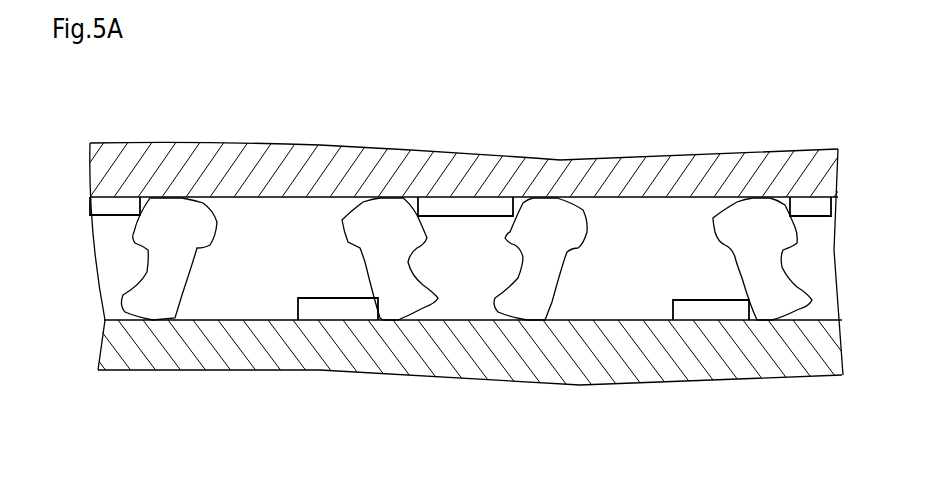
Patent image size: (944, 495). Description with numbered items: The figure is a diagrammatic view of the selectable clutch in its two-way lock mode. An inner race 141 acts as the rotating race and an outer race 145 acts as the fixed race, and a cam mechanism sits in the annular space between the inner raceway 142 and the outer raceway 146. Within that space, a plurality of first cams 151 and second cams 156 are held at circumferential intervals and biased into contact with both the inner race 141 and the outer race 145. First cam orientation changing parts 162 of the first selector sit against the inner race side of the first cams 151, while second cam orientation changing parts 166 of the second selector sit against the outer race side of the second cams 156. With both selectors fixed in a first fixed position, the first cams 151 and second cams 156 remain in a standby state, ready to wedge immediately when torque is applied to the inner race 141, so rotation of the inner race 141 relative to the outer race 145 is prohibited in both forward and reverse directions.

The inner race 141 is at (192, 362).
The inner raceway 142 is at (610, 320).
The outer race 145 is at (628, 165).
The outer raceway 146 is at (294, 203).
The first cam 151 is at (398, 297).
The second cam 156 is at (190, 212).
The first cam orientation changing part 162 is at (341, 310).
The second cam orientation changing part 166 is at (122, 203).